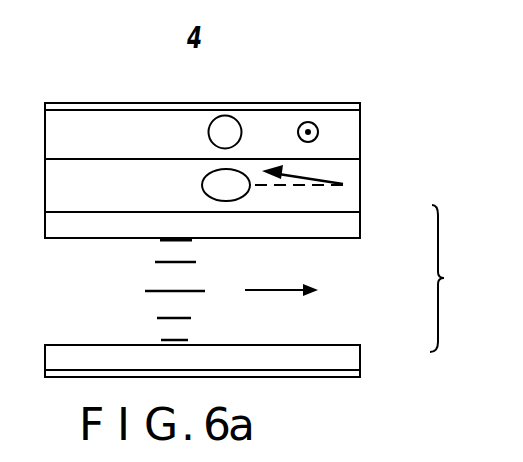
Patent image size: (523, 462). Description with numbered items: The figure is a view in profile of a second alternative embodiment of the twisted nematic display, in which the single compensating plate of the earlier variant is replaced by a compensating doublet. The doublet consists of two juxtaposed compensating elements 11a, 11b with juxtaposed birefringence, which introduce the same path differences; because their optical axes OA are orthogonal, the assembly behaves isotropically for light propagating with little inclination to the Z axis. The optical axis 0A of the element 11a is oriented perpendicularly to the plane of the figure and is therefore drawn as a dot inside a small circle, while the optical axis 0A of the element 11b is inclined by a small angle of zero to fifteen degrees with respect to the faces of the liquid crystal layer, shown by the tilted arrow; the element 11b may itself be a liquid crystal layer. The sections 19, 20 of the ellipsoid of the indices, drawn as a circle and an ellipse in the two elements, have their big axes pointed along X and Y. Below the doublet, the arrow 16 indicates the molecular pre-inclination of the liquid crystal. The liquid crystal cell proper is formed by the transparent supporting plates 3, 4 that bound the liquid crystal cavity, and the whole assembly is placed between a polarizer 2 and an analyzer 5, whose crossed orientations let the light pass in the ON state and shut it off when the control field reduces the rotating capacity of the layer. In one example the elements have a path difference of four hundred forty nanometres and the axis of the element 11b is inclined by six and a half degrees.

The polarizer 2 is at (119, 103).
The transparent supporting plate 3 is at (360, 228).
The transparent supporting plate 4 is at (360, 357).
The analyzer 5 is at (360, 373).
The compensating element 11a is at (360, 140).
The compensating element 11b is at (360, 190).
The arrow 16 is at (280, 290).
The section of the ellipsoid of the indices 19 is at (213, 118).
The section of the ellipsoid of the indices 20 is at (202, 185).
The optical axis 0A is at (308, 122).